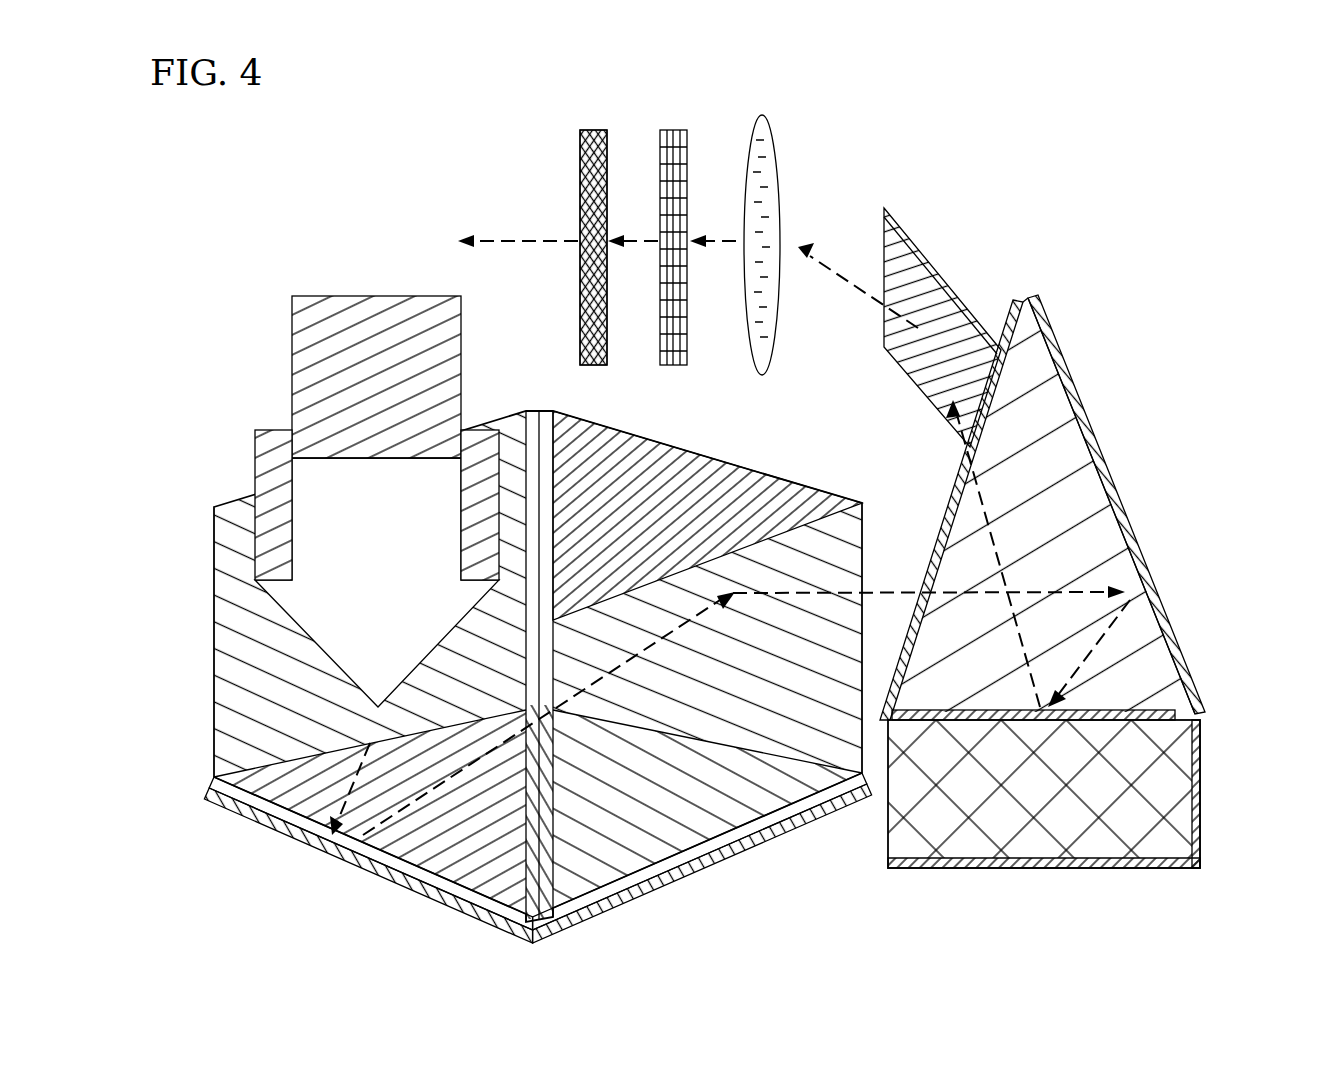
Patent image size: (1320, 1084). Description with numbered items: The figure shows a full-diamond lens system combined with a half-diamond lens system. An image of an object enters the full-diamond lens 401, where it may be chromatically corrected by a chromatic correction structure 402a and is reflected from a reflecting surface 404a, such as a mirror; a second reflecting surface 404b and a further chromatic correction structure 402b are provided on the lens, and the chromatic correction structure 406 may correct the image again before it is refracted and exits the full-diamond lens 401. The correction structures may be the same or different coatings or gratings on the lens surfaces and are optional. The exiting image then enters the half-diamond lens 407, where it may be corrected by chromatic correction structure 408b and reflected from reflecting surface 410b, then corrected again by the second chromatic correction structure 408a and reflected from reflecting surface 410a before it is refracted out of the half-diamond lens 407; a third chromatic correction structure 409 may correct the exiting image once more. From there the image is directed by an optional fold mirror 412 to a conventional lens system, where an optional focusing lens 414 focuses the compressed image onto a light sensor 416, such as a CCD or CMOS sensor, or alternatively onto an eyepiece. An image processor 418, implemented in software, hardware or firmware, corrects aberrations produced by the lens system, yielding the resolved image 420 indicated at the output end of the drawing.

The full-diamond lens 401 is at (224, 641).
The chromatic correction structure 402a is at (214, 781).
The chromatic correction structure 402b is at (808, 805).
The reflecting surface 404a is at (208, 792).
The reflecting surface 404b is at (763, 837).
The chromatic correction structure 406 is at (495, 883).
The half-diamond lens 407 is at (982, 665).
The second chromatic correction structure 408a is at (1113, 713).
The chromatic correction structure 408b is at (1175, 673).
The third chromatic correction structure 409 is at (947, 500).
The reflecting surface 410a is at (1073, 830).
The reflecting surface 410b is at (1125, 520).
The fold mirror 412 is at (943, 268).
The focusing lens 414 is at (772, 140).
The light sensor 416 is at (672, 130).
The image processor 418 is at (590, 130).
The resolved image 420 is at (372, 203).